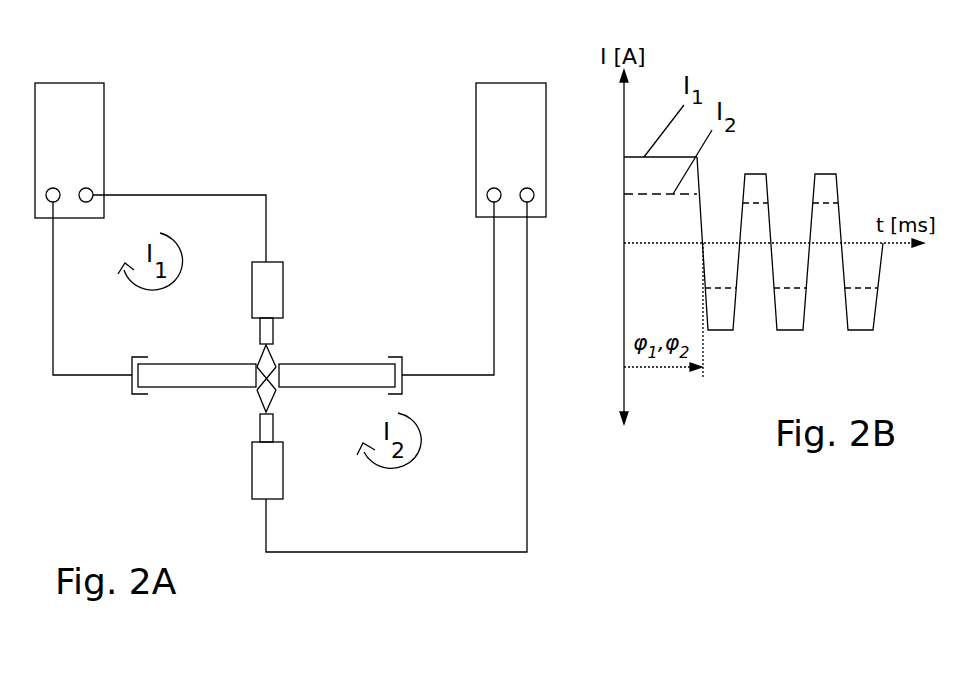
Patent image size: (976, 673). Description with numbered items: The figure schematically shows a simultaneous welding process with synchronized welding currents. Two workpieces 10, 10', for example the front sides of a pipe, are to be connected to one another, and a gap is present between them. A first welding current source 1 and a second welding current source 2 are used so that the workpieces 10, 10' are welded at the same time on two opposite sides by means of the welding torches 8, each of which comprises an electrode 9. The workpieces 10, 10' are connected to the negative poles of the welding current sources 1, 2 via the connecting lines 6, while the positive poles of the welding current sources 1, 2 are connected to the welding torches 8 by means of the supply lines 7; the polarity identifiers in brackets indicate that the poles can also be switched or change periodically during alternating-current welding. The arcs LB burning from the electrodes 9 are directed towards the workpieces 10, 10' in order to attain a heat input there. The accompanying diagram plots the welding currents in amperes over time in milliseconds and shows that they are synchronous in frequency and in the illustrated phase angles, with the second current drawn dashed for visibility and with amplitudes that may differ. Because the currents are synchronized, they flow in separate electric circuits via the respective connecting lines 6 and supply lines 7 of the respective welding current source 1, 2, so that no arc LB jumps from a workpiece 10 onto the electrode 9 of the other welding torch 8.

The first welding current source 1 is at (72, 81).
The second welding current source 2 is at (508, 82).
The connecting line 6 is at (73, 377).
The supply line 7 is at (227, 193).
The welding torch 8 is at (283, 290).
The electrode 9 is at (275, 335).
The workpiece 10 is at (349, 344).
The second workpiece 10' is at (194, 346).
The arc LB is at (258, 368).